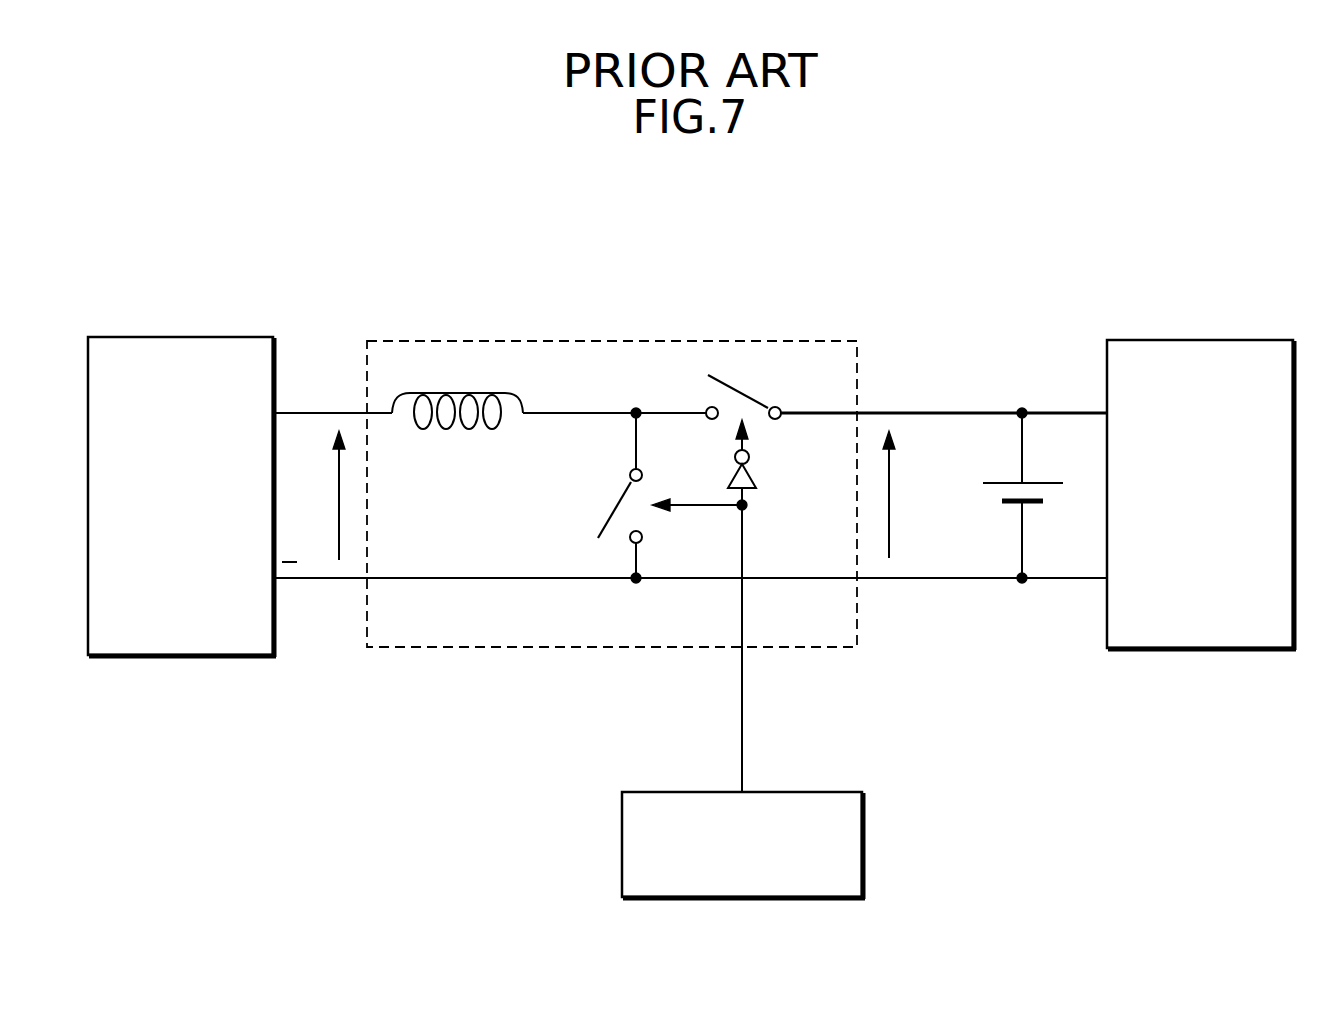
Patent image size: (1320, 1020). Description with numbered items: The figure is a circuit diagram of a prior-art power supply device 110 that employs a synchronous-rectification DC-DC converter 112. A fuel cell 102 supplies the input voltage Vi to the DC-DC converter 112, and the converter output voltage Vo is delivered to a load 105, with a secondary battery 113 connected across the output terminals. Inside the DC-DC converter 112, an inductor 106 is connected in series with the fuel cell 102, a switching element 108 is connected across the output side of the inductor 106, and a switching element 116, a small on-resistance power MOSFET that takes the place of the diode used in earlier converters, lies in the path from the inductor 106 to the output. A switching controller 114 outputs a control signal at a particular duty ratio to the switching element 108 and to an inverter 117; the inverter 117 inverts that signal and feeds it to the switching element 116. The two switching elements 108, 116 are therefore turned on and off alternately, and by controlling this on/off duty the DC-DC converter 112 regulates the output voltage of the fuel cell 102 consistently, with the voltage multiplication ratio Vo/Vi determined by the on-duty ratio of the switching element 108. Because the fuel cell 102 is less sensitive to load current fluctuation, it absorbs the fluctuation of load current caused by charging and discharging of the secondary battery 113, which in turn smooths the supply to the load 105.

The fuel cell 102 is at (220, 337).
The load 105 is at (1247, 340).
The inductor 106 is at (482, 393).
The switching element 108 is at (618, 500).
The power supply device 110 is at (846, 236).
The DC-DC converter 112 is at (696, 341).
The secondary battery 113 is at (1005, 482).
The switching controller 114 is at (866, 830).
The switching element 116 is at (740, 390).
The inverter 117 is at (754, 473).